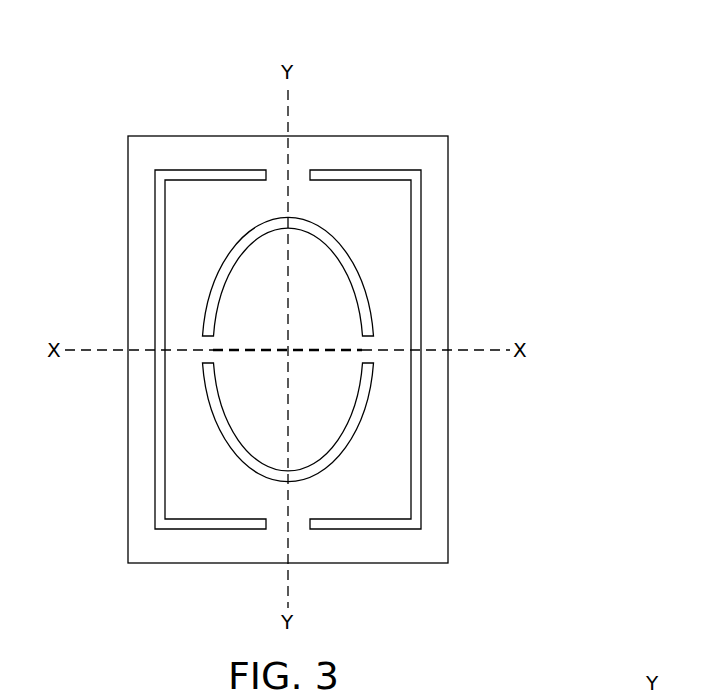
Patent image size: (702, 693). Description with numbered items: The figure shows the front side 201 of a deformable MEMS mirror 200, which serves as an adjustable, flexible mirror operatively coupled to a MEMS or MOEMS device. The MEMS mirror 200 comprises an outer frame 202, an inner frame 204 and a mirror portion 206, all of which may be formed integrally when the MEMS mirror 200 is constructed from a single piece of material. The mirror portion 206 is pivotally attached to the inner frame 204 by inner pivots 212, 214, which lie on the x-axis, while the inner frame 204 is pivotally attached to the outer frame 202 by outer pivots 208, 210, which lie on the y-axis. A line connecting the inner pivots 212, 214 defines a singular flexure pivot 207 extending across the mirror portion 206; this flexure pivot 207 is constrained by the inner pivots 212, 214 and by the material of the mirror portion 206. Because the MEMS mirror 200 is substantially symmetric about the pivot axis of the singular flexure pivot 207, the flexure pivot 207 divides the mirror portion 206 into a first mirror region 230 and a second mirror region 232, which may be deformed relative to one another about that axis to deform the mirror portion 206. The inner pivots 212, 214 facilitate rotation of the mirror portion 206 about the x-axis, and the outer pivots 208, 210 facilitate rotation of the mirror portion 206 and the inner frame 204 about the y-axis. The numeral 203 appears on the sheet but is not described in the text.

The MEMS mirror 200 is at (280, 304).
The front side 201 is at (280, 330).
The outer frame 202 is at (440, 175).
The sheet reference 203 is at (517, 692).
The inner frame 204 is at (393, 500).
The mirror portion 206 is at (217, 350).
The singular flexure pivot 207 is at (368, 352).
The outer pivot 208 is at (278, 527).
The outer pivot 210 is at (298, 170).
The inner pivot 212 is at (372, 342).
The inner pivot 214 is at (203, 342).
The first mirror region 230 is at (245, 277).
The second mirror region 232 is at (243, 425).